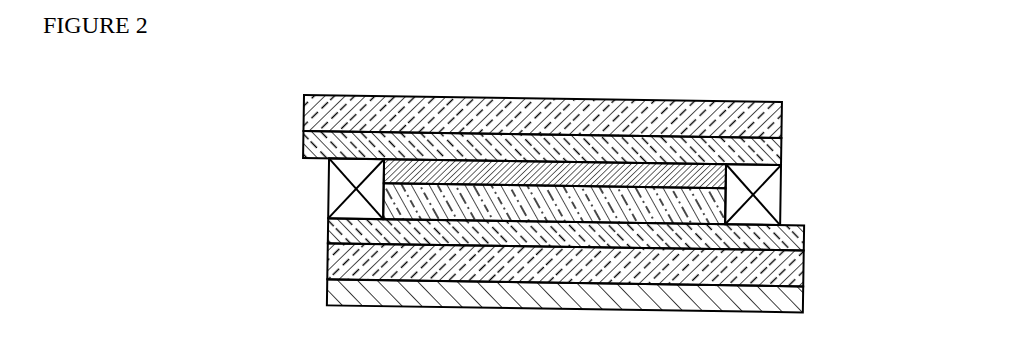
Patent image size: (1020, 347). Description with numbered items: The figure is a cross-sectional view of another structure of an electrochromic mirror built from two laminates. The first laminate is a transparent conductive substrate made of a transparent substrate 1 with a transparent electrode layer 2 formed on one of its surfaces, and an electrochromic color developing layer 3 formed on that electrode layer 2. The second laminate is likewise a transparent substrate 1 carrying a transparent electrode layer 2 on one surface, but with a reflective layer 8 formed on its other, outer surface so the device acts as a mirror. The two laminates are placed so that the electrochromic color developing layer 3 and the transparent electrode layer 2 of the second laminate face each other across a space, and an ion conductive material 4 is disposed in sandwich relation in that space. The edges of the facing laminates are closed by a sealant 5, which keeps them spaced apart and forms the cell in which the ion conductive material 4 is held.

The transparent substrate 1 is at (782, 118).
The transparent electrode layer 2 is at (782, 150).
The electrochromic color developing layer 3 is at (727, 180).
The ion conductive material 4 is at (727, 203).
The sealant 5 is at (343, 190).
The reflective layer 8 is at (804, 302).